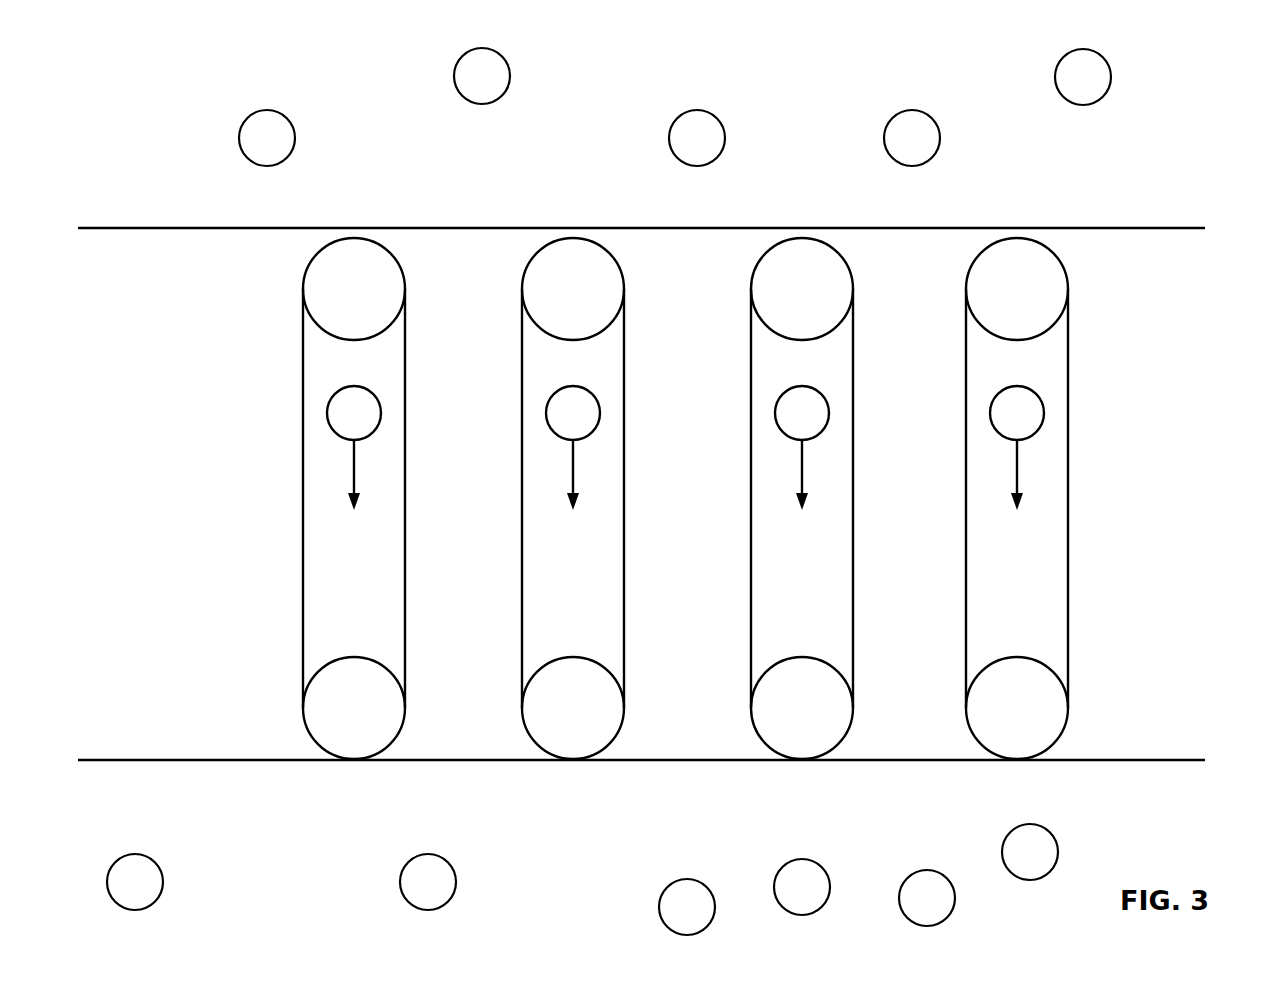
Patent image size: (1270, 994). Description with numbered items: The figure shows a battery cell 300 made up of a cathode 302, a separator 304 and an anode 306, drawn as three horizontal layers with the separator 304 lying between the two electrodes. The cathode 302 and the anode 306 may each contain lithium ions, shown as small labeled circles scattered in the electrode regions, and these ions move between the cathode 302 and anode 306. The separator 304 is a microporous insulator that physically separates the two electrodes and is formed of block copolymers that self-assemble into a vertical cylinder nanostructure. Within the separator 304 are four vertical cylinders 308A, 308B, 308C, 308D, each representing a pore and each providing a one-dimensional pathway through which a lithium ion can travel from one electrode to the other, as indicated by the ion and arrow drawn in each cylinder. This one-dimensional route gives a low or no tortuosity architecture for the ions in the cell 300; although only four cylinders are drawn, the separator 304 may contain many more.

The cell 300 is at (1189, 60).
The cathode 302 is at (582, 858).
The separator 304 is at (641, 494).
The anode 306 is at (675, 88).
The vertical cylinder 308A is at (354, 498).
The vertical cylinder 308B is at (573, 498).
The vertical cylinder 308C is at (802, 498).
The vertical cylinder 308D is at (1017, 498).